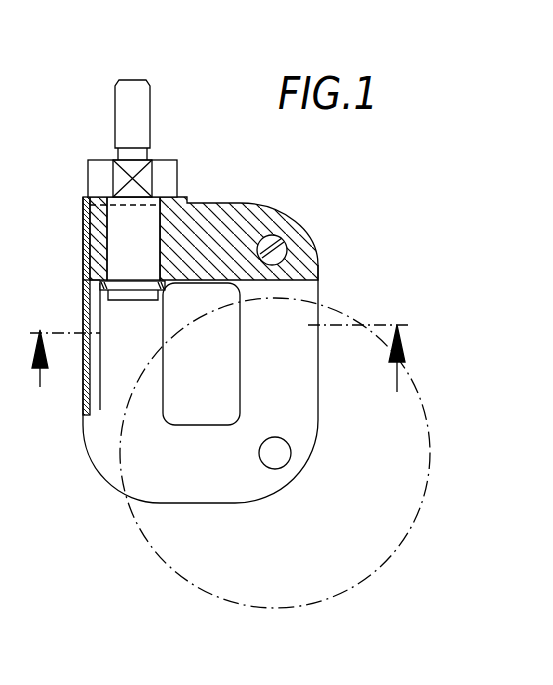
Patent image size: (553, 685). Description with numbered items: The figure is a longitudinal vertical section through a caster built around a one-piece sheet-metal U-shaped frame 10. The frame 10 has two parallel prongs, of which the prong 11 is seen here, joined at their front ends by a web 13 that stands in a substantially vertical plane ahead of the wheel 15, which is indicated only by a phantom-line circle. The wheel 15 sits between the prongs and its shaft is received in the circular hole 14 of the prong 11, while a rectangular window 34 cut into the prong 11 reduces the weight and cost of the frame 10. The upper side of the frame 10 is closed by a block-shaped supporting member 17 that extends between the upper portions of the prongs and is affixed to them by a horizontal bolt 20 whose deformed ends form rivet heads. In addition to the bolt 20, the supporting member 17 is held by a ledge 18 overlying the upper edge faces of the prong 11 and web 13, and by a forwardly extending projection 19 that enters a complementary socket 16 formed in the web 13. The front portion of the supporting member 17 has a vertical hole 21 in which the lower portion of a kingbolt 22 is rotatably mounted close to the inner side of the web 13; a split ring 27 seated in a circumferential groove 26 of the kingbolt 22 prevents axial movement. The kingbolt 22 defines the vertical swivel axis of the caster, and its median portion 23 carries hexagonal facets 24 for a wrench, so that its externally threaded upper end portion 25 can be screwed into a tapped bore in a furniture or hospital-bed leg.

The U-shaped frame 10 is at (324, 283).
The prong 11 is at (102, 450).
The web 13 is at (85, 316).
The circular hole 14 is at (278, 453).
The wheel 15 is at (189, 588).
The female coupling member or socket 16 is at (86, 252).
The supporting member 17 is at (242, 213).
The ledge 18 is at (87, 208).
The projection 19 is at (92, 283).
The horizontal bolt 20 is at (287, 244).
The vertical hole 21 is at (174, 240).
The kingbolt 22 is at (147, 251).
The median portion 23 is at (100, 158).
The facets 24 is at (137, 173).
The externally threaded upper end portion 25 is at (129, 95).
The circumferential groove 26 is at (135, 302).
The split ring 27 is at (166, 285).
The rectangular window 34 is at (165, 384).